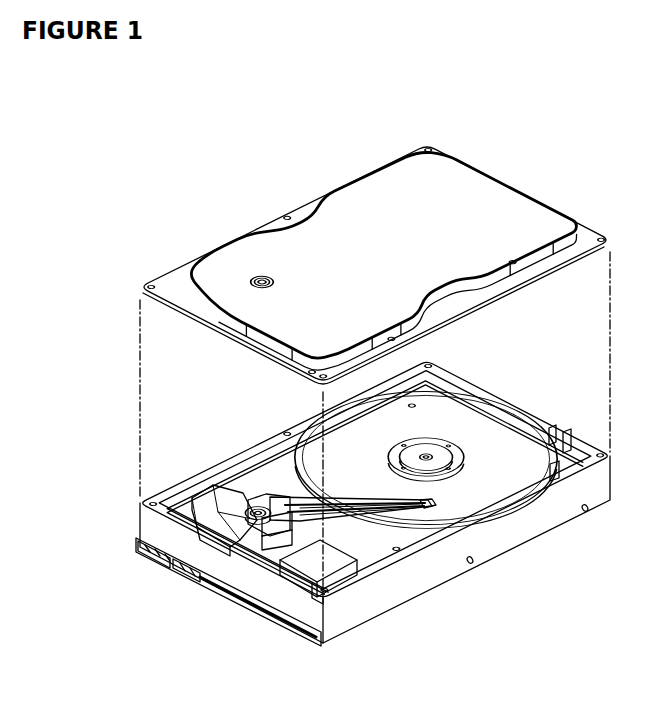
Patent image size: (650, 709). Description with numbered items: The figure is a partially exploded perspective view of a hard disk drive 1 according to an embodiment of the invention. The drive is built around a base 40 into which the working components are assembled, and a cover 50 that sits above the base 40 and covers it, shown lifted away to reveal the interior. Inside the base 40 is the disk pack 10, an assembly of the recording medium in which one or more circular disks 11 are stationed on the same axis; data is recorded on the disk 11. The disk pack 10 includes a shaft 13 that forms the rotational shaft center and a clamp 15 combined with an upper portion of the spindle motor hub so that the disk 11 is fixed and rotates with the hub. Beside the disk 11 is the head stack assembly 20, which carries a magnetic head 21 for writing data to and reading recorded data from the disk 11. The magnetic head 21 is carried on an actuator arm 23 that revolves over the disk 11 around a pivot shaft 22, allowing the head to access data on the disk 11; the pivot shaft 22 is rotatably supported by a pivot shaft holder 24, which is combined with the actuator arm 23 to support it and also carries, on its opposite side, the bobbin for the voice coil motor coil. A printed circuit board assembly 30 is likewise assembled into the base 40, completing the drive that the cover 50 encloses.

The hard disk drive 1 is at (168, 172).
The disk pack 10 is at (450, 440).
The disk 11 is at (497, 443).
The shaft 13 is at (430, 454).
The clamp 15 is at (460, 450).
The head stack assembly 20 is at (270, 493).
The magnetic head 21 is at (423, 503).
The pivot shaft 22 is at (227, 487).
The actuator arm 23 is at (292, 498).
The pivot shaft holder 24 is at (248, 495).
The printed circuit board assembly 30 is at (268, 625).
The base 40 is at (512, 537).
The cover 50 is at (478, 208).